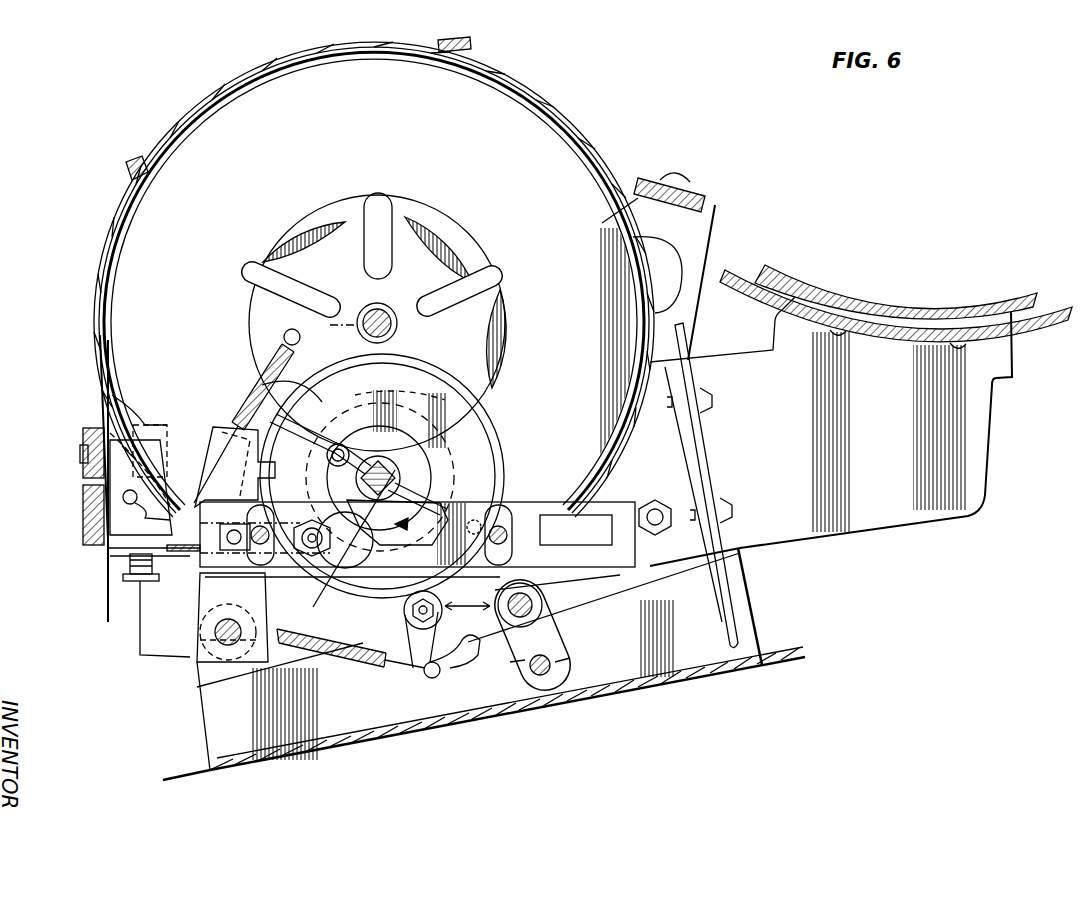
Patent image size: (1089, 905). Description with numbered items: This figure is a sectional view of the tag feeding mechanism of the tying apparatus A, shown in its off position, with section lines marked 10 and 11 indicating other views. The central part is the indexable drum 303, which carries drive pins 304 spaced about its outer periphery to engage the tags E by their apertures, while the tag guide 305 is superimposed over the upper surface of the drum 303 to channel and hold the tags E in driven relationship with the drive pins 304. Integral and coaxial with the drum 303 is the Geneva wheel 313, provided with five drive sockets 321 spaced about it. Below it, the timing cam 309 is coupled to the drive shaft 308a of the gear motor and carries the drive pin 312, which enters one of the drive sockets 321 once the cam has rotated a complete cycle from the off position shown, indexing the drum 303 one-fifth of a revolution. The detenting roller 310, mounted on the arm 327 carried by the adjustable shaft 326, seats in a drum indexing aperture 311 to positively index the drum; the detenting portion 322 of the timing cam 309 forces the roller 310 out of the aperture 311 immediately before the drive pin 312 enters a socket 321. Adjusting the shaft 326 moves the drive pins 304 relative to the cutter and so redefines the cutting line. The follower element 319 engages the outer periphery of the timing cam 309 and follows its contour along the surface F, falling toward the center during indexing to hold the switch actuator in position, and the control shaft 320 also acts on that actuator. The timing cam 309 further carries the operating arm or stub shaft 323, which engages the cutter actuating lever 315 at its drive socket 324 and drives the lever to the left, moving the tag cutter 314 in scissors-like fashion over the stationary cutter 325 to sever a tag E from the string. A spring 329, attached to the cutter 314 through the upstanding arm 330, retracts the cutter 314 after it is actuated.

The indexable drum 303 is at (252, 108).
The drive pins 304 is at (140, 170).
The tag guide 305 is at (517, 85).
The drive sockets 321 is at (372, 196).
The Geneva wheel 313 is at (398, 205).
The operating arm or stub shaft 323 is at (397, 323).
The drum indexing aperture 311 is at (642, 358).
The drive shaft 308a is at (430, 405).
The detenting portion 322 is at (473, 427).
The timing cam 309 is at (467, 463).
The follower element 319 is at (227, 423).
The spring 329 is at (190, 440).
The stationary cutter 325 is at (83, 506).
The tag cutter 314 is at (83, 547).
The drive pin 312 is at (262, 570).
The drive socket 324 is at (327, 600).
The cutter actuating lever 315 is at (597, 504).
The upstanding arm 330 is at (178, 566).
The detenting roller 310 is at (402, 608).
The shaft 326 is at (560, 612).
The control shaft 320 is at (213, 645).
The arm 327 is at (440, 658).
The section line 10- 10 is at (152, 327).
The section line 11- 11 is at (47, 465).
The surface F is at (240, 400).
The tag E is at (108, 602).
The tying apparatus A is at (738, 662).